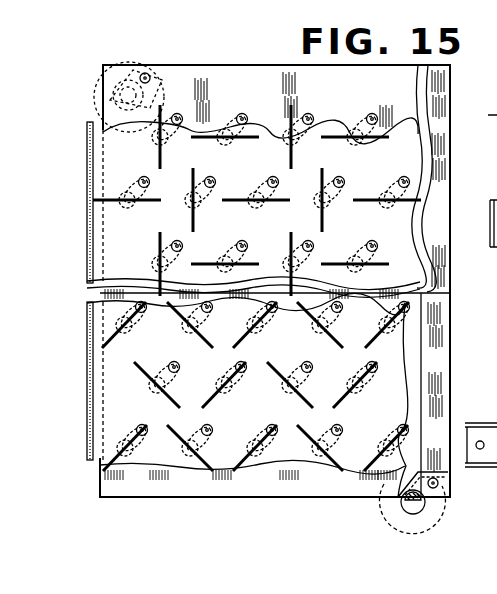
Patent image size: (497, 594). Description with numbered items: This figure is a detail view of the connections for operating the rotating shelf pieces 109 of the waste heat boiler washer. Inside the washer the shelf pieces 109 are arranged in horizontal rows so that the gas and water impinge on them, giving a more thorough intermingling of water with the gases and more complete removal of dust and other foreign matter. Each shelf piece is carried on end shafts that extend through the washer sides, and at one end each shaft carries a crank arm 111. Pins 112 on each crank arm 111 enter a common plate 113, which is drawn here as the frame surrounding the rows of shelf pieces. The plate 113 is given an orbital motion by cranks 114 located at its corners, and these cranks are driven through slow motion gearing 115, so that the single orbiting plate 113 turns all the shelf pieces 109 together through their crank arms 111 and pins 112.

The shelf pieces 109 is at (158, 240).
The crank arm 111 is at (221, 119).
The pins 112 is at (249, 113).
The plate 113 is at (445, 168).
The cranks 114 is at (150, 74).
The slow motion gearing 115 is at (94, 88).